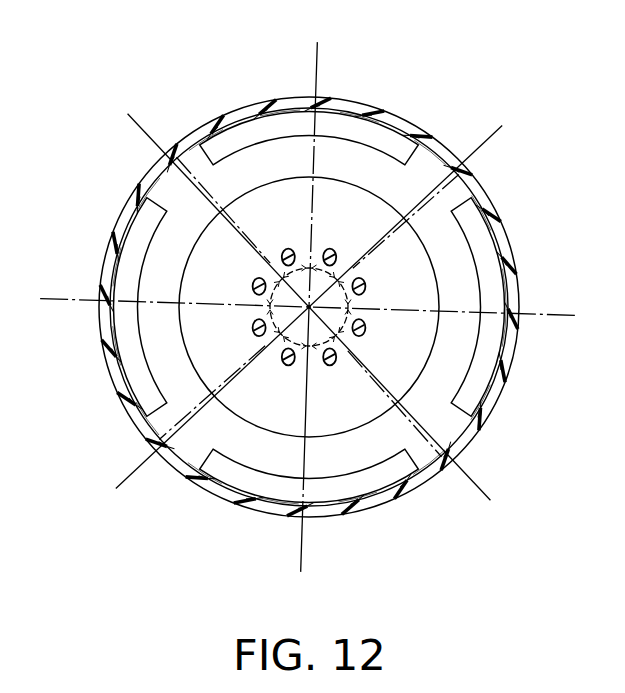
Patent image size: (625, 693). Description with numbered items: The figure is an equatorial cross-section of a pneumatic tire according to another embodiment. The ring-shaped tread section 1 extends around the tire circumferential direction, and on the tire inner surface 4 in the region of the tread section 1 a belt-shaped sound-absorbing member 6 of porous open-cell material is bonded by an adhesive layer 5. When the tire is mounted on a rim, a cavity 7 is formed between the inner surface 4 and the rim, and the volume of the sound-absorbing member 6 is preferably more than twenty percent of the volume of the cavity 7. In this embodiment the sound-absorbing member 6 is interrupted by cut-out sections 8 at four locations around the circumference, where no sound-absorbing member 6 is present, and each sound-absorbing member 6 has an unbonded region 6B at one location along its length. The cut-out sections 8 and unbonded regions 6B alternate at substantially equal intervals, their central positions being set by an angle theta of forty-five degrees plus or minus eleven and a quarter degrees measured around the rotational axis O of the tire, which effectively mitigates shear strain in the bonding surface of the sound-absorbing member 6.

The tread section 1 is at (397, 125).
The tire inner surface 4 is at (150, 183).
The adhesive layer 5 is at (247, 112).
The sound-absorbing member 6 is at (342, 128).
The cavity 7 is at (453, 272).
The cut-out section 8 is at (193, 150).
The rotational axis O is at (309, 307).
The unbonded region 6B is at (303, 107).